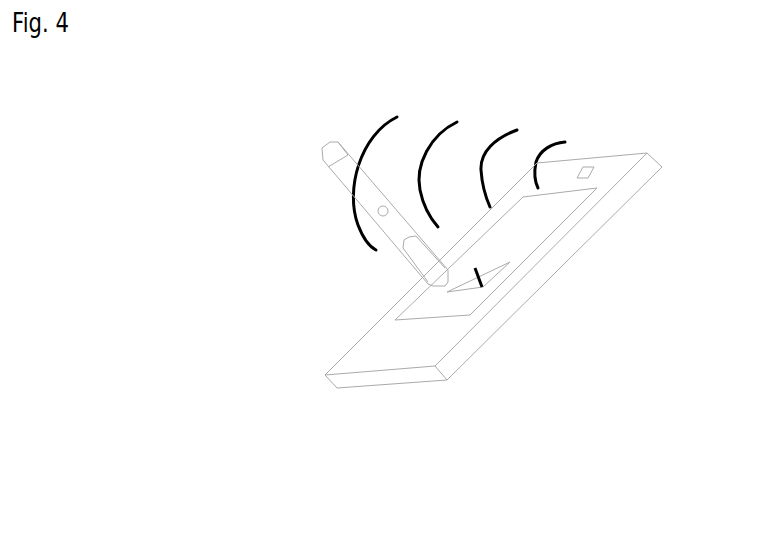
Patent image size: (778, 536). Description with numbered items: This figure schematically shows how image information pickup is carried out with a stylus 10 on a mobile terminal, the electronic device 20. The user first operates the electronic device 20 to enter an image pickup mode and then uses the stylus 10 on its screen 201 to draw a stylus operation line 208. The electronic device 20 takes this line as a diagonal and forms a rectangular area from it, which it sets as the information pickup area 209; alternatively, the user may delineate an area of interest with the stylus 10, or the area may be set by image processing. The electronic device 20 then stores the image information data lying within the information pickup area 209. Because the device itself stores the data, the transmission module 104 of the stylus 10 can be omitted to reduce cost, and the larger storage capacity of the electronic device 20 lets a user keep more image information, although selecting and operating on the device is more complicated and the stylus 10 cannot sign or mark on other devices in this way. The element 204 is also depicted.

The stylus 10 is at (322, 147).
The transmission module 104 is at (382, 205).
The electronic device 20 is at (557, 277).
The screen 201 is at (533, 252).
The mounting hole 204 is at (592, 170).
The stylus operation line 208 is at (475, 268).
The information pickup area 209 is at (497, 273).